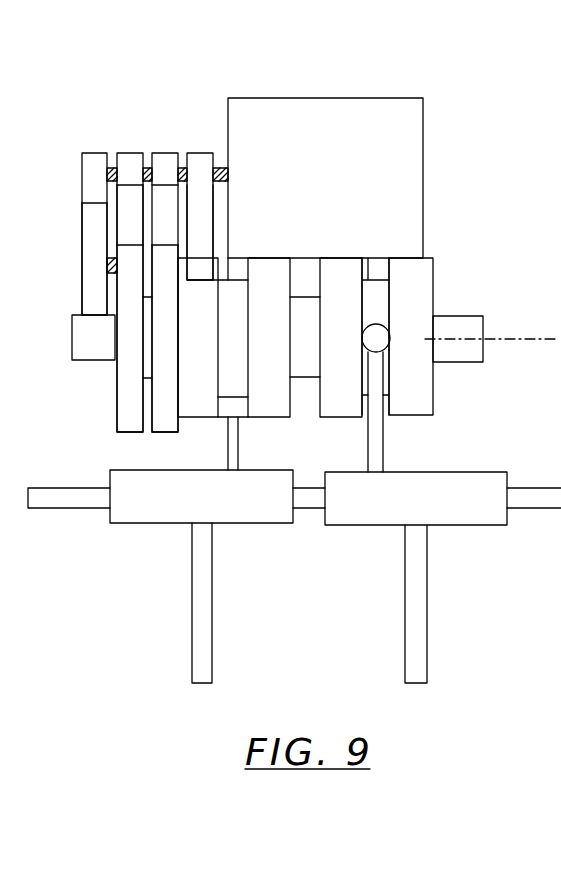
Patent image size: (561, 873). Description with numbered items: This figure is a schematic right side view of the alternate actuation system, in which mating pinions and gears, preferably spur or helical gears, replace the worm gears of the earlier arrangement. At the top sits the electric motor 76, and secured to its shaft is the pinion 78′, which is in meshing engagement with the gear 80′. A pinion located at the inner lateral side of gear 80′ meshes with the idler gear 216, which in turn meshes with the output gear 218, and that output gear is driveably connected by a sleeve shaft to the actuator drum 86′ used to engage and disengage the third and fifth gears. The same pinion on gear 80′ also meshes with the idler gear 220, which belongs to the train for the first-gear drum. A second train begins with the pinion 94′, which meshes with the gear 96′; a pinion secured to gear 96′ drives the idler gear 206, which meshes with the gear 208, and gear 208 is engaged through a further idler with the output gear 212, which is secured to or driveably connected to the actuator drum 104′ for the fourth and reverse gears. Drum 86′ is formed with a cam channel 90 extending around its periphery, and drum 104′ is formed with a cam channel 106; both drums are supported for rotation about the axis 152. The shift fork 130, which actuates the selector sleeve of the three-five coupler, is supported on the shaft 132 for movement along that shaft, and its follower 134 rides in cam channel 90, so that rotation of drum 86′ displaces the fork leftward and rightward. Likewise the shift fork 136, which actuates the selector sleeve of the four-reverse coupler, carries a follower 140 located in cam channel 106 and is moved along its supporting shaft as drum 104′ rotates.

The electric motor 76 is at (345, 193).
The pinion 78′ is at (92, 187).
The gear 80′ is at (83, 288).
The actuator drum 86′ is at (415, 392).
The cam channel 90 is at (380, 302).
The pinion 94′ is at (197, 165).
The gear 96′ is at (197, 217).
The actuator drum 104′ is at (187, 402).
The cam channel 106 is at (232, 385).
The shift fork 130 is at (392, 517).
The shaft 132 is at (547, 500).
The follower 134 is at (377, 432).
The shift fork 136 is at (165, 517).
The follower 140 is at (242, 435).
The axis 152 is at (510, 335).
The idler gear 206 is at (158, 202).
The gear 208 is at (127, 163).
The output gear 212 is at (160, 393).
The idler gear 216 is at (127, 237).
The output gear 218 is at (128, 366).
The idler gear 220 is at (132, 155).